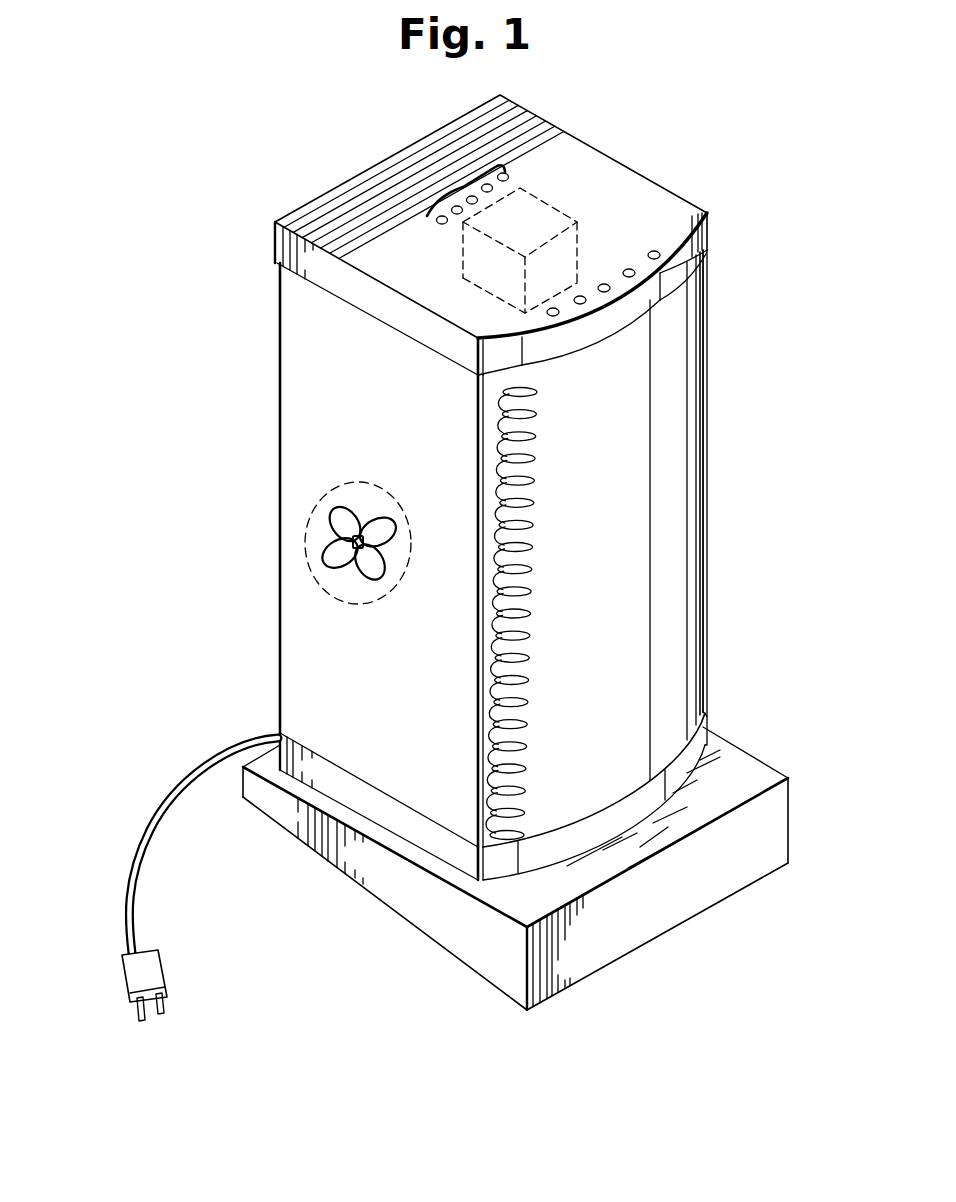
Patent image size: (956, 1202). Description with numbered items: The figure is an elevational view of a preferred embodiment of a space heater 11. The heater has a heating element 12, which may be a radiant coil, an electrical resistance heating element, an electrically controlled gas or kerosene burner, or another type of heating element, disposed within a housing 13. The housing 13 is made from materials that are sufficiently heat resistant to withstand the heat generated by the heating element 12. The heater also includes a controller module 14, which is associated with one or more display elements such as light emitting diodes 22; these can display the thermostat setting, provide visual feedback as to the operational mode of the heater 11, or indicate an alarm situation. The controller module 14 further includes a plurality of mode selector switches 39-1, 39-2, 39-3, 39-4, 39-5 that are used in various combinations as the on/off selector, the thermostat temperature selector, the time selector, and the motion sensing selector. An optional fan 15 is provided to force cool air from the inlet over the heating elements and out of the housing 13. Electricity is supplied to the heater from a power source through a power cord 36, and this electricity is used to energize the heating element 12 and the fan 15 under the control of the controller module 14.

The space heater 11 is at (253, 605).
The heating element 12 is at (520, 633).
The housing 13 is at (698, 538).
The controller module 14 is at (577, 222).
The fan 15 is at (307, 508).
The light emitting diodes 22 is at (463, 187).
The power cord 36 is at (170, 790).
The mode selector switch 39-1 is at (558, 316).
The mode selector switch 39-2 is at (585, 304).
The mode selector switch 39-3 is at (610, 290).
The mode selector switch 39-4 is at (635, 275).
The mode selector switch 39-5 is at (657, 251).